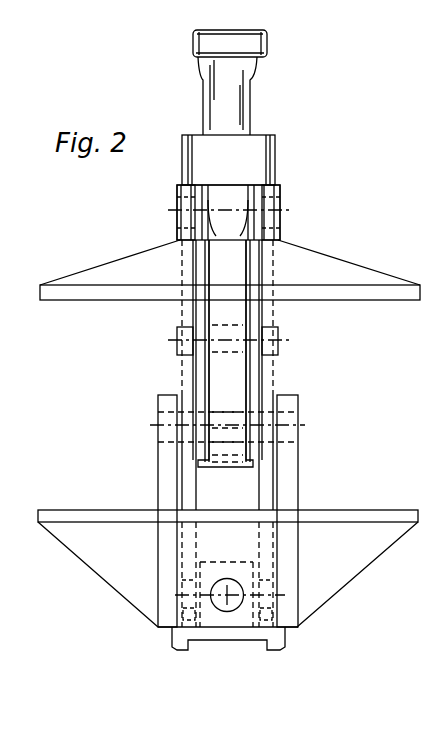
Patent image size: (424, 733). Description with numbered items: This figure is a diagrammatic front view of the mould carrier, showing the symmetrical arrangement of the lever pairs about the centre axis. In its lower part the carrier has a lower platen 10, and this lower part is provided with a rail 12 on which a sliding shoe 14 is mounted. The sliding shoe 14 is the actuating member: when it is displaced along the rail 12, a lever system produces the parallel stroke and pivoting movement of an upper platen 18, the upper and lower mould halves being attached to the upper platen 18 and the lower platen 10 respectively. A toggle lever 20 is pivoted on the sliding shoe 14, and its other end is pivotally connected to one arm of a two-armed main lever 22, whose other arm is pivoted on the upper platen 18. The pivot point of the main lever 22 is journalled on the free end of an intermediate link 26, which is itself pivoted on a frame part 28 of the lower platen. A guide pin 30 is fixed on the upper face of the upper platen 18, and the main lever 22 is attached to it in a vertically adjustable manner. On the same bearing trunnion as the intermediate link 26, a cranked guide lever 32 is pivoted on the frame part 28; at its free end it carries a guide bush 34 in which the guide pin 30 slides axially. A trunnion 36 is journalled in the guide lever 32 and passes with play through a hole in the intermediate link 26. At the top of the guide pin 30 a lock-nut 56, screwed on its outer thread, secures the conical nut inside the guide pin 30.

The lower platen 10 is at (373, 512).
The rail 12 is at (232, 602).
The sliding shoe 14 is at (217, 617).
The upper platen 18 is at (376, 288).
The toggle lever 20 is at (190, 548).
The main lever 22 is at (215, 378).
The intermediate link 26 is at (205, 372).
The frame part 28 is at (165, 488).
The guide pin 30 is at (230, 105).
The guide lever 32 is at (183, 316).
The guide bush 34 is at (250, 160).
The trunnion 36 is at (280, 337).
The lock-nut 56 is at (218, 44).